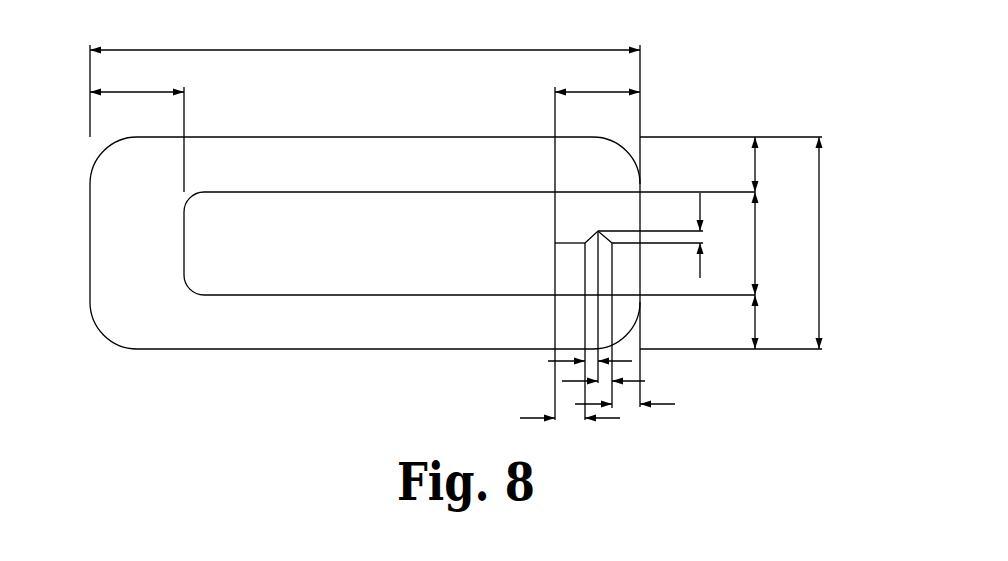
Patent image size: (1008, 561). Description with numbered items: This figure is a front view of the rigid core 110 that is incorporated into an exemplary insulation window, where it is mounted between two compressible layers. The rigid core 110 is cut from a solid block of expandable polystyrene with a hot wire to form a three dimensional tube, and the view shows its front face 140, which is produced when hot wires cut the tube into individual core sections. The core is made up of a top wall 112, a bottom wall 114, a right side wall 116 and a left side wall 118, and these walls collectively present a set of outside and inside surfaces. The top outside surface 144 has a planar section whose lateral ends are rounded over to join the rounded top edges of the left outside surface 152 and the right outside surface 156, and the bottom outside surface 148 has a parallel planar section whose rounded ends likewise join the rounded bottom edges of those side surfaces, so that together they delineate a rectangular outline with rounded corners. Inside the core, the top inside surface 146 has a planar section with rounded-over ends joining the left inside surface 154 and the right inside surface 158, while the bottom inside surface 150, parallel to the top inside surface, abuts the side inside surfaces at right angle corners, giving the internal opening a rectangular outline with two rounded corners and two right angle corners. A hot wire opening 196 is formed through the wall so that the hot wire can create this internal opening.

The rigid core 110 is at (685, 80).
The top wall 112 is at (100, 262).
The bottom wall 114 is at (578, 285).
The right side wall 116 is at (370, 338).
The left side wall 118 is at (397, 160).
The front face 140 is at (225, 334).
The top outside surface 144 is at (90, 303).
The top inside surface 146 is at (185, 262).
The bottom outside surface 148 is at (640, 191).
The bottom inside surface 150 is at (555, 218).
The left outside surface 152 is at (300, 137).
The left inside surface 154 is at (395, 192).
The right outside surface 156 is at (428, 350).
The right inside surface 158 is at (313, 295).
The hot wire opening 196 is at (622, 245).